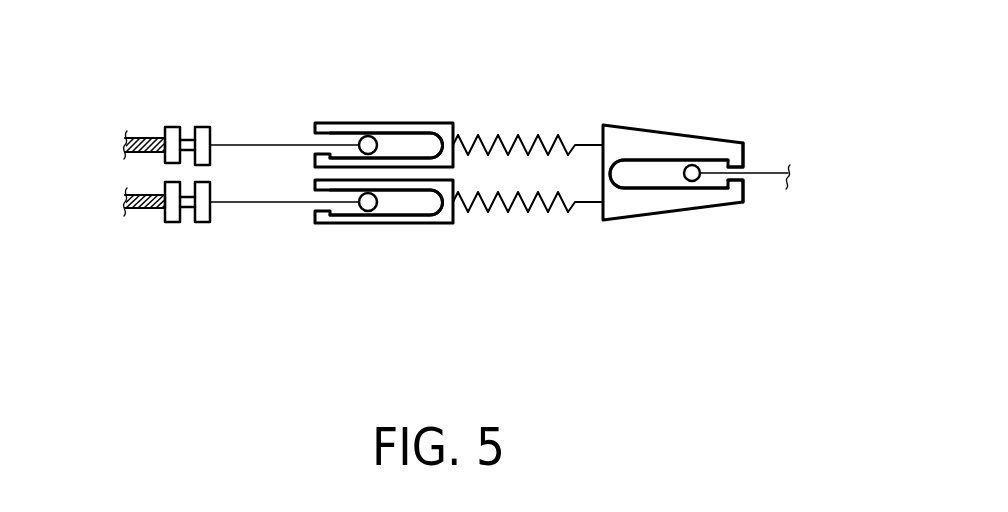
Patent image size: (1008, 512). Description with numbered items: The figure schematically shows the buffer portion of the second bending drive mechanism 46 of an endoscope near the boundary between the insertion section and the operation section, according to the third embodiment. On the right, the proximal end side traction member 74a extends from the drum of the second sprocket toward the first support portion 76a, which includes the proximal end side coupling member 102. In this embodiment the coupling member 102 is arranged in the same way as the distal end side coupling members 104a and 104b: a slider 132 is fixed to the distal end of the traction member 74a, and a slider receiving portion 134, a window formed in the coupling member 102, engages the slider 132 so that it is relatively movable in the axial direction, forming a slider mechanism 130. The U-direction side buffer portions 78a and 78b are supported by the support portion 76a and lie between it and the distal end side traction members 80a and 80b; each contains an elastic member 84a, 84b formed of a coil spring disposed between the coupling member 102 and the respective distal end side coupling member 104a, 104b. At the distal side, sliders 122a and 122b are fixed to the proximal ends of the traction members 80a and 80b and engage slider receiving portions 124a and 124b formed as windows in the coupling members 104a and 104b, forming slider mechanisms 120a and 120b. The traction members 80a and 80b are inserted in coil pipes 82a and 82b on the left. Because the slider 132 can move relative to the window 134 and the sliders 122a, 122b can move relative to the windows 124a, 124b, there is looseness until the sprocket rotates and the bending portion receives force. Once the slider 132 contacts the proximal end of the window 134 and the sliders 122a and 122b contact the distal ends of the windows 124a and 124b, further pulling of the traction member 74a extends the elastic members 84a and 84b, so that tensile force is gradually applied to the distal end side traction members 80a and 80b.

The second bending drive mechanism 46 is at (528, 178).
The proximal end side traction member 74a is at (772, 176).
The first support portion 76a is at (735, 140).
The U-direction side buffer portion 78a is at (528, 101).
The U-direction side buffer portion 78b is at (528, 249).
The distal end side traction member 80a is at (238, 144).
The distal end side traction member 80b is at (236, 206).
The coil pipe 82a is at (137, 137).
The coil pipe 82b is at (137, 209).
The elastic member 84a is at (538, 142).
The elastic member 84b is at (516, 213).
The proximal end side coupling member 102 is at (620, 124).
The distal end side coupling member 104a is at (439, 122).
The distal end side coupling member 104b is at (330, 224).
The slider mechanism 120a is at (365, 107).
The slider mechanism 120b is at (346, 243).
The slider 122a is at (365, 137).
The slider 122b is at (368, 212).
The slider receiving portion 124a is at (394, 134).
The slider receiving portion 124b is at (424, 195).
The slider mechanism 130 is at (692, 156).
The slider 132 is at (693, 165).
The slider receiving portion 134 is at (648, 188).